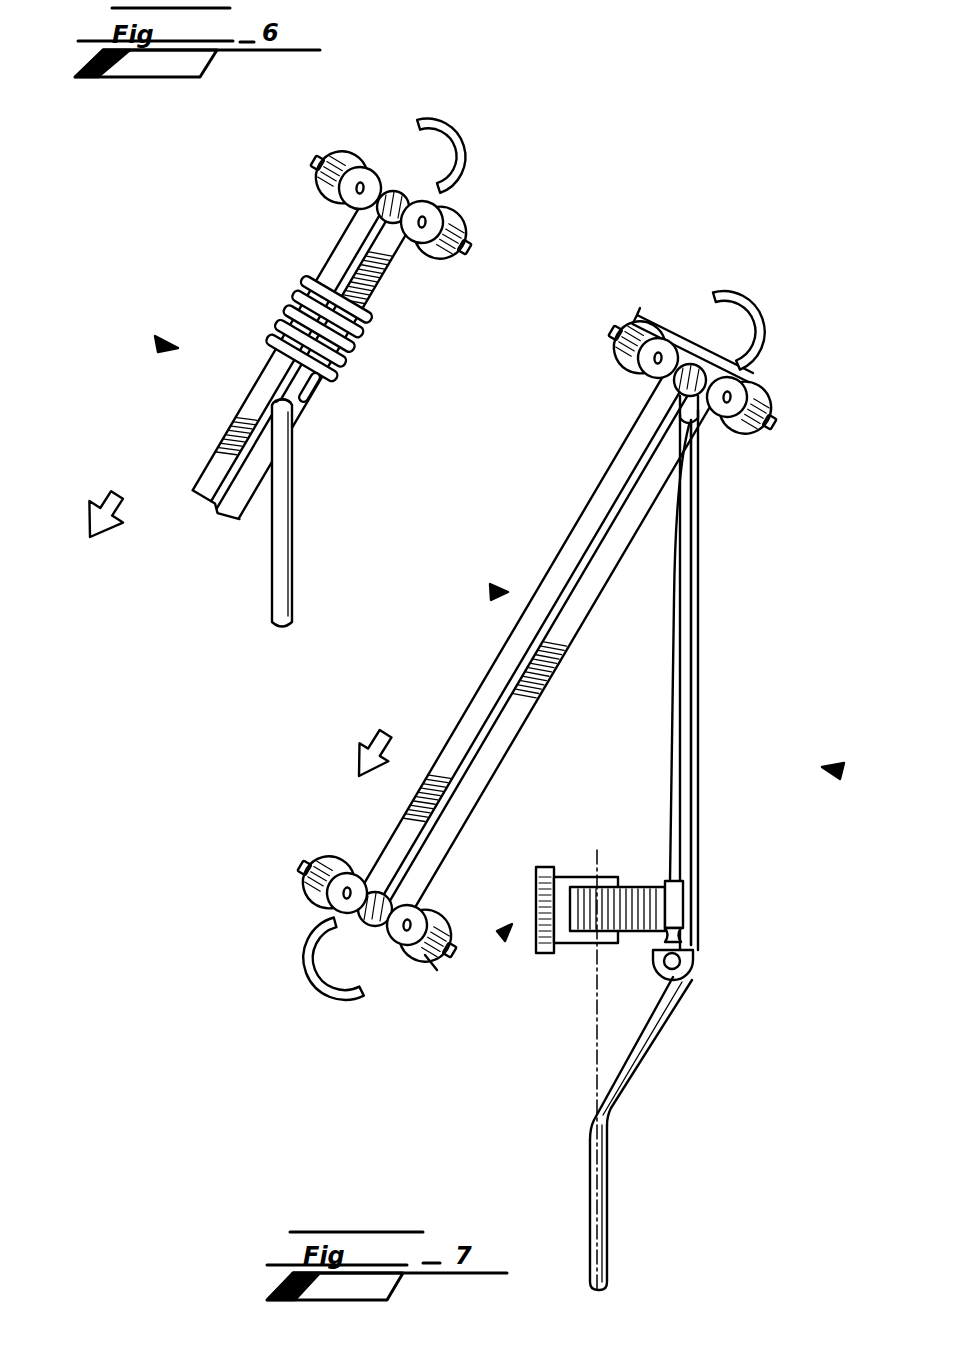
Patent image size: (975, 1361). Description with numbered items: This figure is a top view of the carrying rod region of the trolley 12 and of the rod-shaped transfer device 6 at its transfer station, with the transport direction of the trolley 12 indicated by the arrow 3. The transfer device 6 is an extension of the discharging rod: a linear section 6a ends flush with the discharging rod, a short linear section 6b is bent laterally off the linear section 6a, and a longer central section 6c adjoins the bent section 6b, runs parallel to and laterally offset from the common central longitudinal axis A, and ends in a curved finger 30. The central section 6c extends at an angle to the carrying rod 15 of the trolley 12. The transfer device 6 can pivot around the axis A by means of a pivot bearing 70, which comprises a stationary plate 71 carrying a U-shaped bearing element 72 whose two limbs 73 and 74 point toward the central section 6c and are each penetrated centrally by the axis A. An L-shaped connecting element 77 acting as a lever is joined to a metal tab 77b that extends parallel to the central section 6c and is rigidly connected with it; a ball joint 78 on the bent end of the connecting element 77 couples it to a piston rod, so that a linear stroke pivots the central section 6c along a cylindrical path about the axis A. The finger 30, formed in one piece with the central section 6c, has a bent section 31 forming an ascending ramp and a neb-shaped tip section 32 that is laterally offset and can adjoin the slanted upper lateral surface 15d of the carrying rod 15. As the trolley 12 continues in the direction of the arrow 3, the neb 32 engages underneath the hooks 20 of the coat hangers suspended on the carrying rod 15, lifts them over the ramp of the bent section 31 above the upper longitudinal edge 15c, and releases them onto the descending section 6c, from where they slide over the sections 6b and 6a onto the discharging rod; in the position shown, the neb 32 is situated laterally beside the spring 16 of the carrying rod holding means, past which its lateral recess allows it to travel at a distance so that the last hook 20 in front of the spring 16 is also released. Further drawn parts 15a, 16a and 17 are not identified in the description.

In FIG. 6, the arrow 3 is at (114, 493).
In FIG. 7, the arrow 3 is at (380, 733).
In FIG. 7, the transfer device 6 is at (840, 772).
In FIG. 7, the linear section 6a is at (607, 1212).
In FIG. 7, the bent section 6b is at (648, 1052).
In FIG. 6, the central section 6c is at (283, 533).
In FIG. 7, the central section 6c is at (698, 670).
In FIG. 6, the trolley 12 is at (152, 340).
In FIG. 7, the trolley 12 is at (495, 592).
In FIG. 6, the carrying rod 15 is at (205, 495).
In FIG. 7, the carrying rod 15 is at (405, 835).
In FIG. 6, the hook 15a is at (437, 125).
In FIG. 7, the hook 15a is at (745, 292).
In FIG. 6, the upper longitudinal edge 15c is at (245, 417).
In FIG. 7, the upper longitudinal edge 15c is at (565, 593).
In FIG. 6, the upper side wall 15d is at (383, 262).
In FIG. 7, the upper side wall 15d is at (480, 778).
In FIG. 6, the spring 16 is at (398, 180).
In FIG. 7, the spring 16 is at (680, 355).
In FIG. 6, the roller axle 16a is at (317, 163).
In FIG. 7, the roller axle 16a is at (620, 337).
In FIG. 6, the hub 17 is at (337, 160).
In FIG. 7, the hub 17 is at (638, 362).
In FIG. 6, the hooks 20 is at (302, 292).
In FIG. 6, the finger 30 is at (297, 427).
In FIG. 7, the finger 30 is at (696, 420).
In FIG. 7, the bent section 31 is at (675, 402).
In FIG. 6, the neb 32 is at (307, 397).
In FIG. 7, the neb 32 is at (727, 373).
In FIG. 7, the pivot bearing 70 is at (537, 945).
In FIG. 7, the stationary plate 71 is at (504, 933).
In FIG. 7, the U-shaped bearing element 72 is at (560, 938).
In FIG. 7, the limb 73 is at (565, 925).
In FIG. 7, the limb 74 is at (582, 878).
In FIG. 7, the connecting element 77 is at (647, 868).
In FIG. 7, the metal tab 77b is at (673, 697).
In FIG. 7, the ball joint 78 is at (700, 958).
In FIG. 7, the central longitudinal axis A is at (597, 1063).